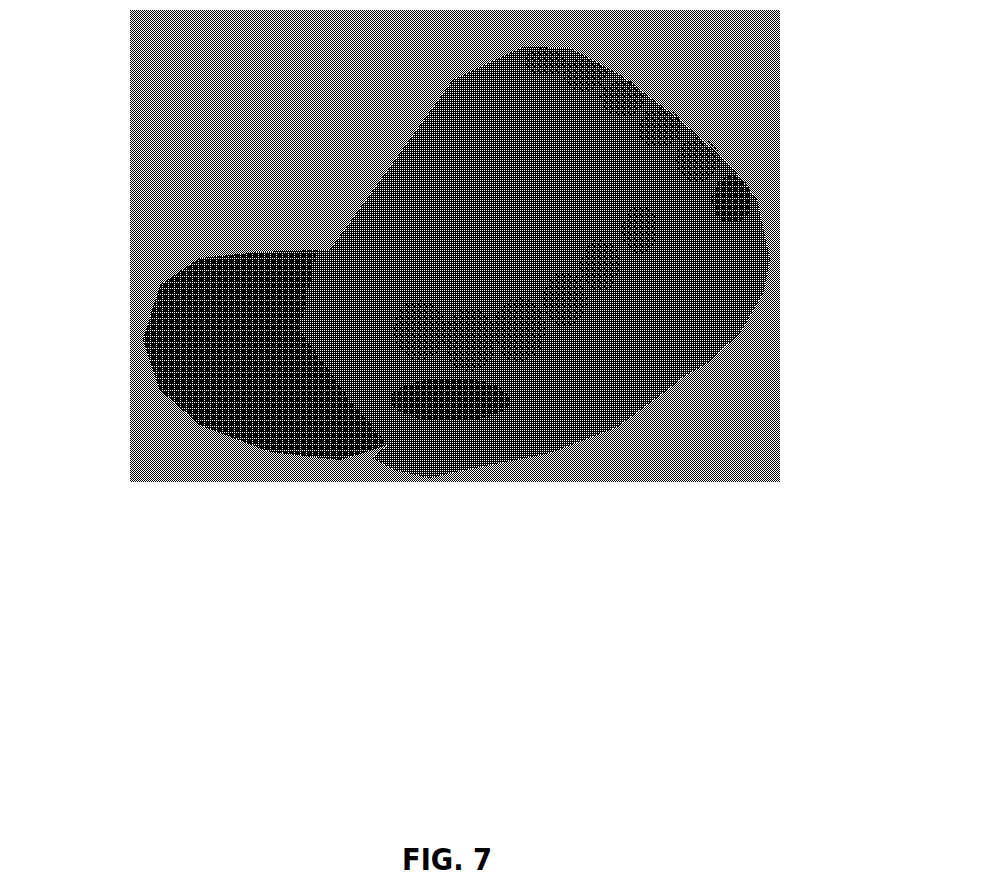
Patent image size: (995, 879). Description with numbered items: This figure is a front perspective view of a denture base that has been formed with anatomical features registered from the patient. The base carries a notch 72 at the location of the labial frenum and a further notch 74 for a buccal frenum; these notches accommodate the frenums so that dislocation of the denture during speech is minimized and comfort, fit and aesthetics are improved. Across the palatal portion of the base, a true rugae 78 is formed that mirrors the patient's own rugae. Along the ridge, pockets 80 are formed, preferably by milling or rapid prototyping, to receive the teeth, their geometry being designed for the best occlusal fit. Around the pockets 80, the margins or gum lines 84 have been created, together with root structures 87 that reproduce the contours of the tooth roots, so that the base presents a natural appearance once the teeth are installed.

The notch 72 is at (660, 369).
The notch 74 is at (392, 445).
The true rugae 78 is at (397, 240).
The pockets 80 is at (230, 318).
The margins or gum lines 84 is at (737, 215).
The root structures 87 is at (490, 412).